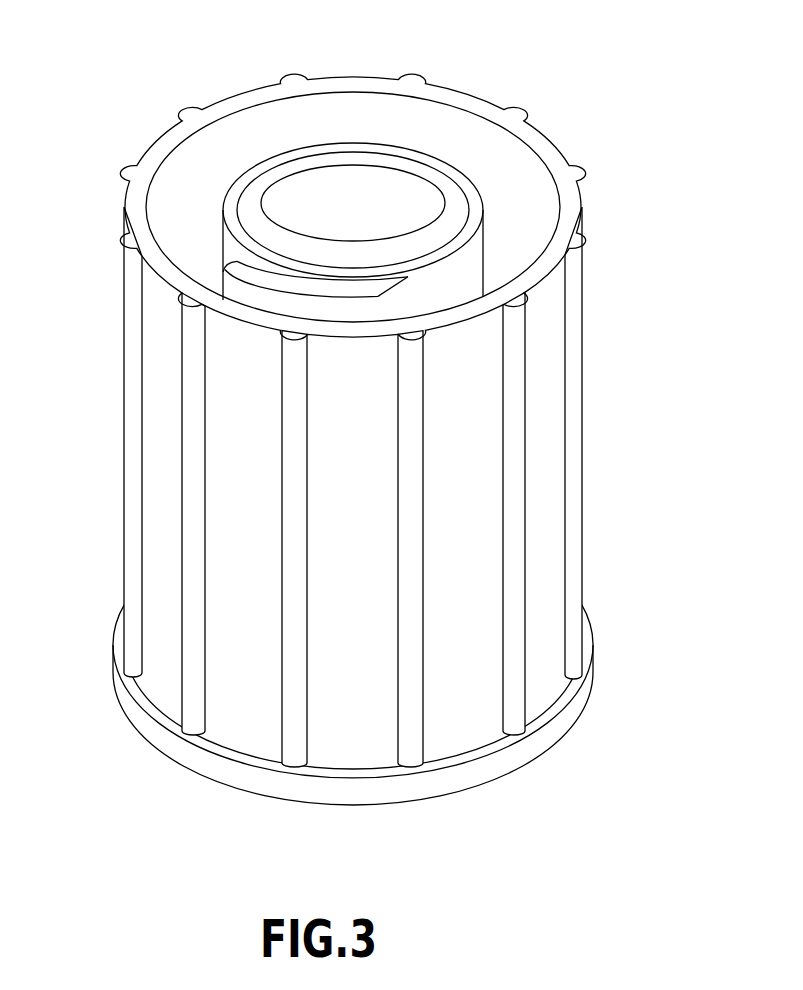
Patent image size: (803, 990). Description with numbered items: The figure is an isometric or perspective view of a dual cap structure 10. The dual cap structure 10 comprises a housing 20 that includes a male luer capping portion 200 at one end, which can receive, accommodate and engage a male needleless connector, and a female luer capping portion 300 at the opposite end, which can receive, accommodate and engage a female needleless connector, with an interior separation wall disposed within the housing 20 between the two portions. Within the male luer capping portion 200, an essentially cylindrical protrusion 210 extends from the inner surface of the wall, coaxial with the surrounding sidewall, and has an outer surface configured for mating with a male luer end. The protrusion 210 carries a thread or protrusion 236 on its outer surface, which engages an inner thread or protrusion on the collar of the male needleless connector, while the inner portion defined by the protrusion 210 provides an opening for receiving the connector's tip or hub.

The dual cap structure 10 is at (373, 409).
The housing 20 is at (570, 424).
The male luer capping portion 200 is at (570, 205).
The protrusion 210 is at (347, 152).
The thread or protrusion 236 is at (245, 193).
The female luer capping portion 300 is at (572, 642).